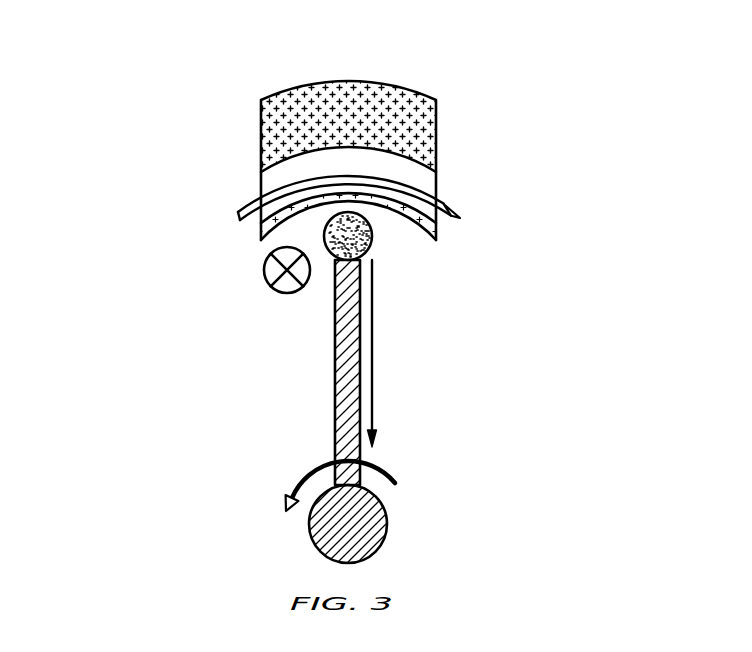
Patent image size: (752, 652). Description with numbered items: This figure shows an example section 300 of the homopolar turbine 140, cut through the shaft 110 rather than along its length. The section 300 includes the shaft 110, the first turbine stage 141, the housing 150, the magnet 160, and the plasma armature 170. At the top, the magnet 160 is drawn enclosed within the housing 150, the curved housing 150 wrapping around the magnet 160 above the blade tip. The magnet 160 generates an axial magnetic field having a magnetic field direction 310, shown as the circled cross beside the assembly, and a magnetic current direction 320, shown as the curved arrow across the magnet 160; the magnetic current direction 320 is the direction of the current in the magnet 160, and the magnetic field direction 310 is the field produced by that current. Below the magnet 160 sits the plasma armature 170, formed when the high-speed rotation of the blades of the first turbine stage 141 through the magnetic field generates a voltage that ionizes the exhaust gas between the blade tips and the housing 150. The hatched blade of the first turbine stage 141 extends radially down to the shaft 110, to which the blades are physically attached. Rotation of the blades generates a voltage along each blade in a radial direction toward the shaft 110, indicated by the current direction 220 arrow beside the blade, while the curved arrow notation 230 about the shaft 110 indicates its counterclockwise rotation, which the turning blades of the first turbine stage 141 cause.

The section 300 is at (226, 52).
The housing 150 is at (270, 125).
The magnet 160 is at (266, 190).
The magnetic current direction 320 is at (452, 207).
The plasma armature 170 is at (373, 242).
The magnetic field direction 310 is at (263, 277).
The turbine 140 is at (332, 437).
The first turbine stage 141 is at (335, 368).
The shaft 110 is at (385, 547).
The current direction 220 is at (376, 372).
The notation 230 is at (296, 482).